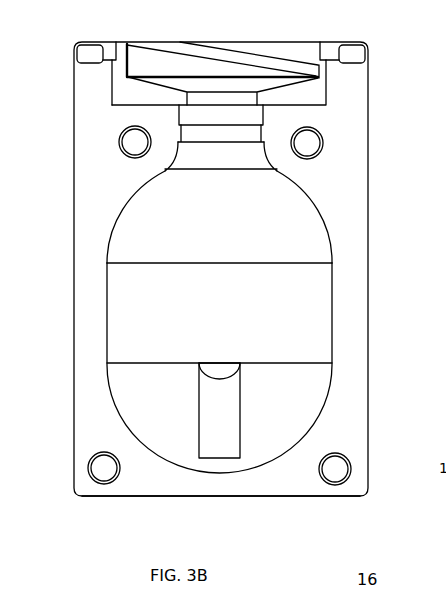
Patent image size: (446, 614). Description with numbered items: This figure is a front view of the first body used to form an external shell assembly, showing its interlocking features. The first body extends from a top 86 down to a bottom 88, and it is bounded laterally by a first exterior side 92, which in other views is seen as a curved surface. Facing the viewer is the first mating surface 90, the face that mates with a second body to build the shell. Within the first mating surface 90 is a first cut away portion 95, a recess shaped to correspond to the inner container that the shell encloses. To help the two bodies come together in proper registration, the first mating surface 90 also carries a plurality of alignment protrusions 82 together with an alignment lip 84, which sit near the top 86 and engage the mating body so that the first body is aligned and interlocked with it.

The alignment protrusions 82 is at (127, 140).
The alignment lip 84 is at (324, 52).
The top 86 is at (115, 42).
The bottom 88 is at (298, 497).
The first mating surface 90 is at (88, 278).
The first exterior side 92 is at (73, 200).
The first cut away portion 95 is at (115, 402).